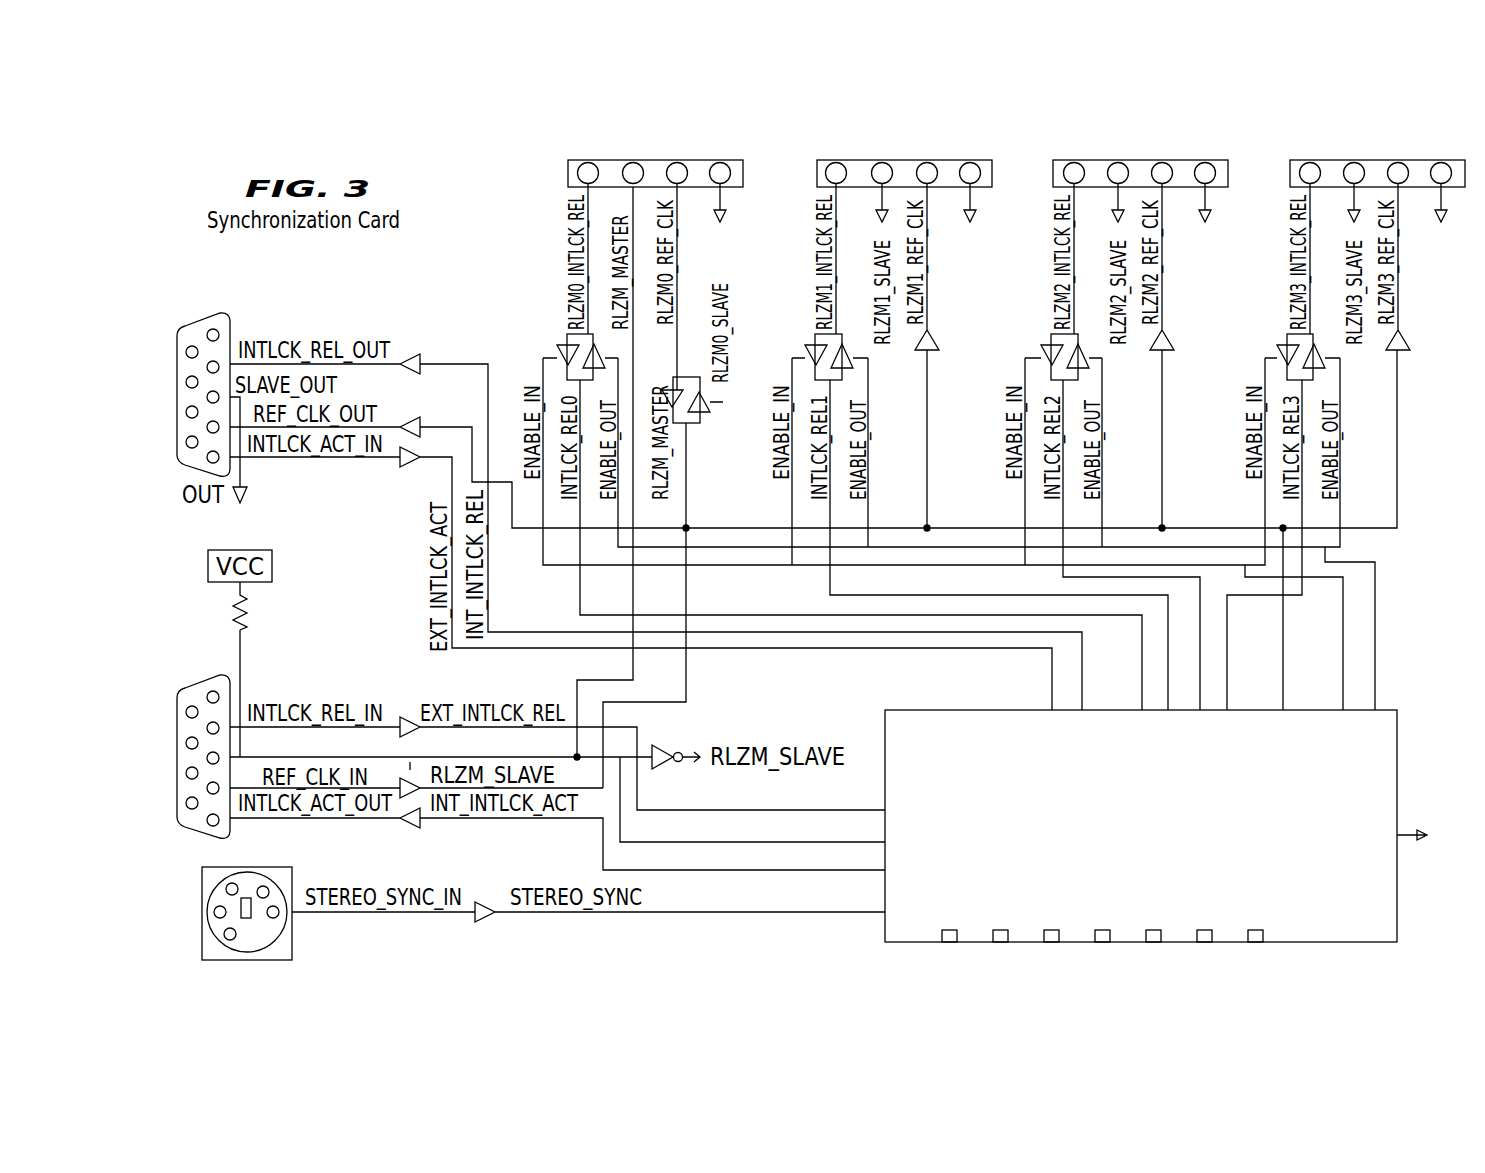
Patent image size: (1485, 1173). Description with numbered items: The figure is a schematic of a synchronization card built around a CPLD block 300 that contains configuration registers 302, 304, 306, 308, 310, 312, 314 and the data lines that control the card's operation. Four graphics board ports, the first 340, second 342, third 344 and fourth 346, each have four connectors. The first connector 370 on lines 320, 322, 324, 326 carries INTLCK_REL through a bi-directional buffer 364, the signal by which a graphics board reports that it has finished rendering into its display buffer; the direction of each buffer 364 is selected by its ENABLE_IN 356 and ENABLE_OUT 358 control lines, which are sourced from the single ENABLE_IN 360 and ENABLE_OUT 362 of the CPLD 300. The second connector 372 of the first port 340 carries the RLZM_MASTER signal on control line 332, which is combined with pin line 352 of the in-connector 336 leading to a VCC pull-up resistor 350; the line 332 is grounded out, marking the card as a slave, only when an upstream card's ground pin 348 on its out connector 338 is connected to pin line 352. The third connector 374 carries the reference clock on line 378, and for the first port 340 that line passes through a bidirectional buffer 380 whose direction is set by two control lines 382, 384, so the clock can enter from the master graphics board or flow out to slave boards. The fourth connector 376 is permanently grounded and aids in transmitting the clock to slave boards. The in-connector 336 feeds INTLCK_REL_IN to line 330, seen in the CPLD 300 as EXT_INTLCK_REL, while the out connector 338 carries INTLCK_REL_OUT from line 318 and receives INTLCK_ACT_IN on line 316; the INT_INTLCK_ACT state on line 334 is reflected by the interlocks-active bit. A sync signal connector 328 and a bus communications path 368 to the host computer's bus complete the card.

The CPLD block 300 is at (1365, 912).
The configuration register 302 is at (950, 944).
The configuration register 304 is at (1001, 944).
The configuration register 306 is at (1052, 944).
The configuration register 308 is at (1103, 944).
The configuration register 310 is at (1154, 944).
The configuration register 312 is at (1205, 944).
The configuration register 314 is at (1256, 944).
The INTLCK_ACT_IN line 316 is at (1050, 710).
The INTLCK_REL_OUT line 318 is at (1080, 710).
The RLZM0_INTLCK_REL line 320 is at (1140, 710).
The RLZM1_INTLCK_REL line 322 is at (1166, 710).
The RLZM2_INTLCK_REL line 324 is at (1200, 620).
The RLZM3_INTLCK_REL line 326 is at (1229, 710).
The sync signal connector 328 is at (258, 867).
The INTLCK_REL_IN line 330 is at (750, 810).
The control line 332 is at (577, 680).
The INT_INTLCK_ACT line 334 is at (603, 850).
The in-connector 336 is at (190, 676).
The out connector 338 is at (196, 313).
The first graphics board port 340 is at (738, 187).
The second graphics board port 342 is at (987, 187).
The third graphics board port 344 is at (1223, 187).
The fourth graphics board port 346 is at (1460, 187).
The ground pin 348 is at (247, 497).
The VCC pull-up resistor 350 is at (252, 612).
The pin line 352 is at (240, 757).
The ENABLE_IN control line 356 is at (556, 350).
The ENABLE_OUT control line 358 is at (600, 370).
The ENABLE_IN 360 is at (1350, 700).
The ENABLE_OUT 362 is at (1376, 706).
The bi-directional buffer 364 is at (567, 340).
The bus communications path 368 is at (1410, 835).
The first connector 370 is at (588, 162).
The second connector 372 is at (633, 162).
The third connector 374 is at (677, 162).
The fourth connector 376 is at (720, 162).
The reference clock line 378 is at (690, 494).
The bidirectional buffer 380 is at (690, 428).
The control line 382 is at (662, 397).
The control line 384 is at (668, 745).